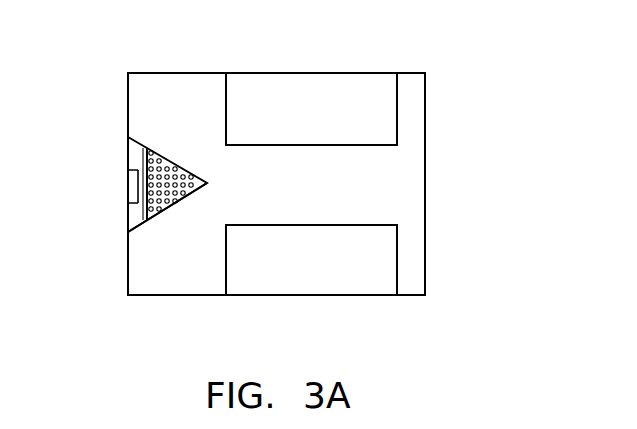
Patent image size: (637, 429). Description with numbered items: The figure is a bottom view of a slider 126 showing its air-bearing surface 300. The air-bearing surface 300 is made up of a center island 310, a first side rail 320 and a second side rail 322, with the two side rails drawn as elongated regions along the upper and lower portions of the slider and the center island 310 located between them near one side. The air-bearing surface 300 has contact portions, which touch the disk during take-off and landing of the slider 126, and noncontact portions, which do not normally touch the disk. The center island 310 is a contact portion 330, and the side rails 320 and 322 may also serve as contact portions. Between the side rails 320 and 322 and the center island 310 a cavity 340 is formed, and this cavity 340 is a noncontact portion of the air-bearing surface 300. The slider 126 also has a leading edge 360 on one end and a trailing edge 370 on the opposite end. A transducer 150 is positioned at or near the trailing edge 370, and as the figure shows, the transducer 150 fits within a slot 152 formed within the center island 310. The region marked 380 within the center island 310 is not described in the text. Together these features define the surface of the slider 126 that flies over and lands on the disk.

The air-bearing surface 300 is at (162, 82).
The slider 126 is at (188, 73).
The first side rail 320 is at (311, 82).
The second side rail 322 is at (321, 287).
The contact portion 330 is at (167, 152).
The filled region 380 is at (187, 175).
The center island 310 is at (169, 212).
The transducer 150 is at (131, 173).
The slot 152 is at (143, 212).
The cavity 340 is at (372, 195).
The leading edge 360 is at (425, 252).
The trailing edge 370 is at (128, 267).